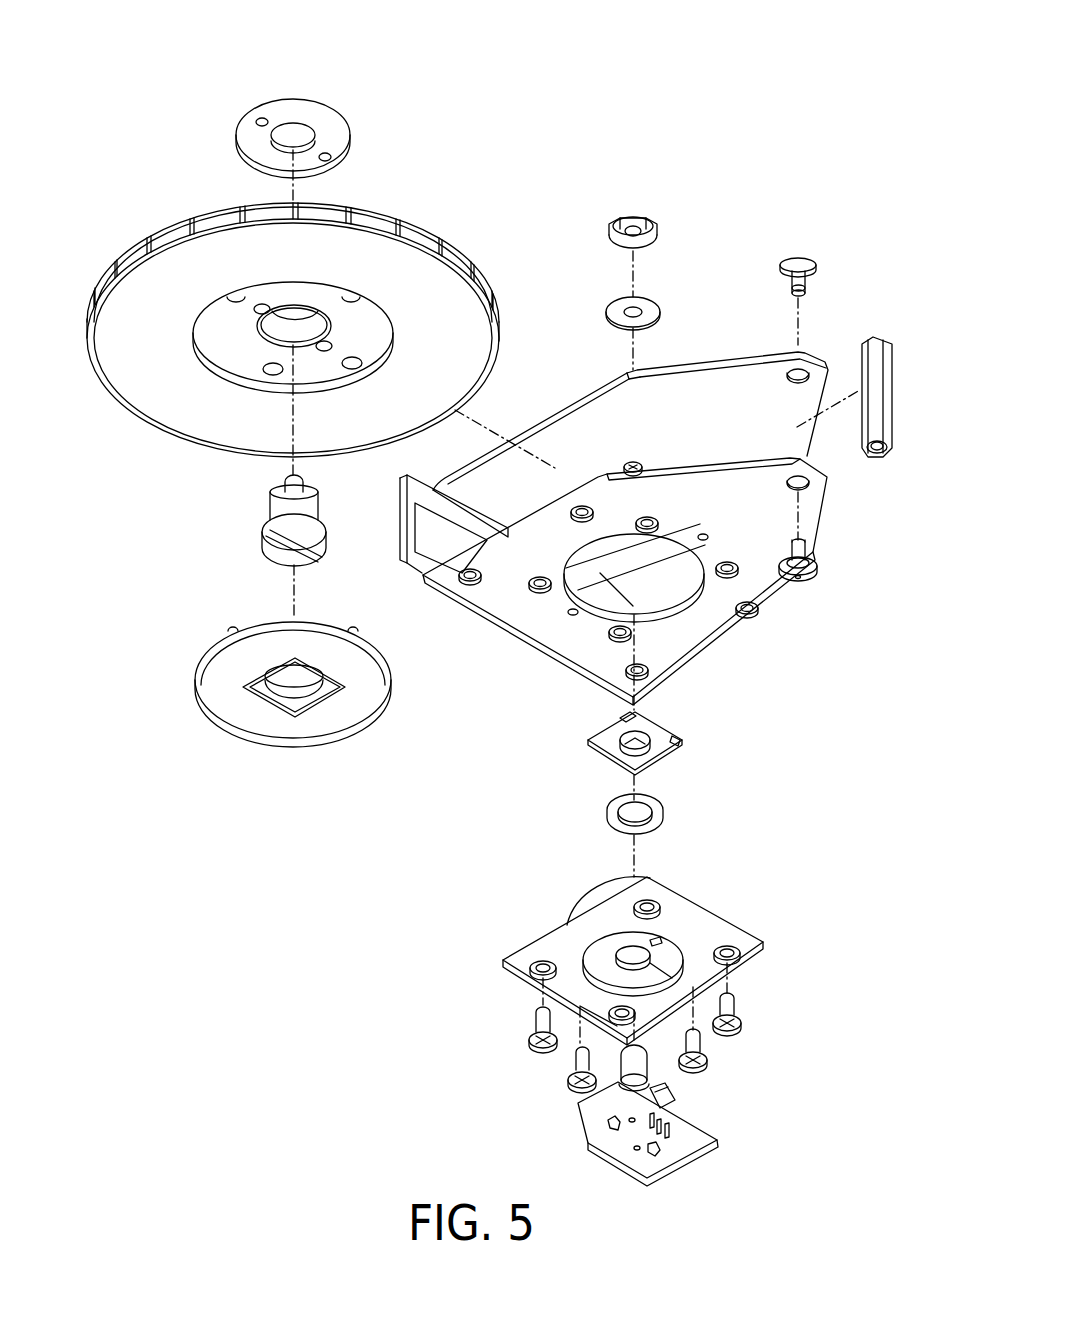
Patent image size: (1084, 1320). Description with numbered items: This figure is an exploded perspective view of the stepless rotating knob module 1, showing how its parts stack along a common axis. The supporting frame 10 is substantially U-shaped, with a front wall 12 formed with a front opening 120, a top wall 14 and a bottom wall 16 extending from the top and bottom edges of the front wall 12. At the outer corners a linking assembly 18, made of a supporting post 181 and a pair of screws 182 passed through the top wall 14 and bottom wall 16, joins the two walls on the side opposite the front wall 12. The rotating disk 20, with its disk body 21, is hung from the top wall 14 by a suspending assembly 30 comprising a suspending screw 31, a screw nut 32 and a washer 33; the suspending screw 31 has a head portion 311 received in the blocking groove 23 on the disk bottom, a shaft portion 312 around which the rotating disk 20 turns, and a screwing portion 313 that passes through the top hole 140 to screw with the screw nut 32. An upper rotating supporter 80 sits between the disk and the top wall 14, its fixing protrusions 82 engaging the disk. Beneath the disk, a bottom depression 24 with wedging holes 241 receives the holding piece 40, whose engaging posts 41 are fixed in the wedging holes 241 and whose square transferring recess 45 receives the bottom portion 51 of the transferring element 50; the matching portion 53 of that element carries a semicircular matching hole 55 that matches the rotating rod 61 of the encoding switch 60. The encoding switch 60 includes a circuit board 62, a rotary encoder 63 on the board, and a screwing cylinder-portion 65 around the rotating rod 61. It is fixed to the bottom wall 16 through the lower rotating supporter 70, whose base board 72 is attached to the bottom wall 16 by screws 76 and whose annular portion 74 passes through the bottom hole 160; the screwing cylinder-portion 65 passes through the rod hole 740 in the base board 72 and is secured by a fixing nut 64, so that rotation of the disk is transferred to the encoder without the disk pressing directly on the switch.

The stepless rotating knob module 1 is at (737, 29).
The supporting frame 10 is at (630, 509).
The front wall 12 is at (454, 540).
The front opening 120 is at (442, 548).
The top wall 14 is at (530, 428).
The top hole 140 is at (636, 472).
The bottom wall 16 is at (625, 587).
The bottom hole 160 is at (665, 585).
The linking assembly 18 is at (840, 419).
The supporting post 181 is at (872, 377).
The screws 182 is at (795, 258).
The rotating disk 20 is at (312, 319).
The disk body 21 is at (452, 251).
The blocking groove 23 is at (310, 325).
The bottom depression 24 is at (314, 357).
The wedging holes 241 is at (353, 369).
The suspending assembly 30 is at (688, 293).
The suspending screw 31 is at (257, 535).
The head portion 311 is at (320, 550).
The shaft portion 312 is at (312, 506).
The screwing portion 313 is at (300, 479).
The screw nut 32 is at (658, 230).
The washer 33 is at (655, 316).
The holding piece 40 is at (261, 675).
The engaging posts 41 is at (233, 630).
The transferring recess 45 is at (271, 704).
The transferring element 50 is at (609, 752).
The bottom portion 51 is at (660, 752).
The matching portion 53 is at (660, 718).
The matching hole 55 is at (630, 745).
The encoding switch 60 is at (624, 1098).
The rotating rod 61 is at (572, 1062).
The circuit board 62 is at (700, 1128).
The rotary encoder 63 is at (672, 1098).
The fixing nut 64 is at (655, 806).
The screwing cylinder-portion 65 is at (650, 1082).
The lower rotating supporter 70 is at (649, 965).
The base board 72 is at (712, 936).
The annular portion 74 is at (583, 903).
The rod hole 740 is at (583, 957).
The screws 76 is at (705, 1055).
The upper rotating supporter 80 is at (270, 114).
The fixing protrusions 82 is at (262, 93).